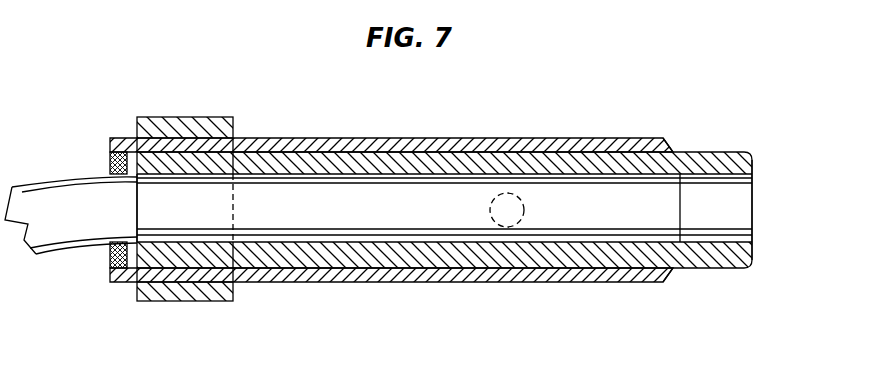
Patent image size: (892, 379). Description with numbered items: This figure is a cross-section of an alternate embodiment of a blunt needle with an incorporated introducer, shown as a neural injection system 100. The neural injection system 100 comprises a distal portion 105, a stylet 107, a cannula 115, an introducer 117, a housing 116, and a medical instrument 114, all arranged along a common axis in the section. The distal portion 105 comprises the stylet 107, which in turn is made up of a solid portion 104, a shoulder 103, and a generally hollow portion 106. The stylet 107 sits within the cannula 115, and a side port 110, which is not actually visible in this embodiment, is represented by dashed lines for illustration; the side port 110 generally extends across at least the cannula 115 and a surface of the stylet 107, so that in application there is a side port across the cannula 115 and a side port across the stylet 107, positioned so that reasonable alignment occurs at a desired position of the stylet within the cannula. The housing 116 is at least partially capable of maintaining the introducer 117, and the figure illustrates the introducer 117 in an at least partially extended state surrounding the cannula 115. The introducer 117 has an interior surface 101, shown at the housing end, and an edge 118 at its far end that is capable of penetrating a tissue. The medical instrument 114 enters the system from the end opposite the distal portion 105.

The neural injection system 100 is at (546, 116).
The interior surface 101 is at (108, 258).
The shoulder 103 is at (752, 250).
The solid portion 104 is at (713, 220).
The distal portion 105 is at (770, 192).
The generally hollow portion 106 is at (588, 197).
The stylet 107 is at (372, 218).
The side port 110 is at (490, 191).
The medical instrument 114 is at (60, 197).
The cannula 115 is at (382, 162).
The housing 116 is at (197, 293).
The introducer 117 is at (325, 142).
The edge 118 is at (673, 150).